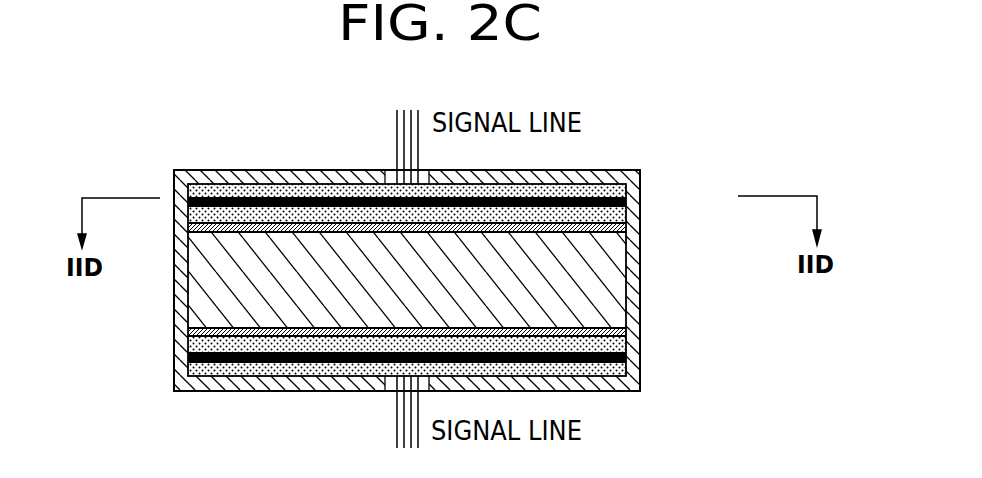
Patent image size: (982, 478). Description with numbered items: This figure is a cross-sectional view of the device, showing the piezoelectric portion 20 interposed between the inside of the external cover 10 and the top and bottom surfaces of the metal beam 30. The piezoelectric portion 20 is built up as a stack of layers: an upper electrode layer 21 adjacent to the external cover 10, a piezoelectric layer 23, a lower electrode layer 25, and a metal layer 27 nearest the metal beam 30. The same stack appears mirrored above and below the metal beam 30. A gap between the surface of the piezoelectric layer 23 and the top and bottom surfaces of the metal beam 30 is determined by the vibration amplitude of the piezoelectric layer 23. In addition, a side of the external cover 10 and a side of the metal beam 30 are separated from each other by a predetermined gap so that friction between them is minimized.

The external cover 10 is at (280, 176).
The piezoelectric portion 20 is at (718, 127).
The upper electrode layer 21 is at (640, 171).
The piezoelectric layer 23 is at (626, 188).
The lower electrode layer 25 is at (626, 201).
The metal layer 27 is at (626, 222).
The metal beam 30 is at (612, 275).